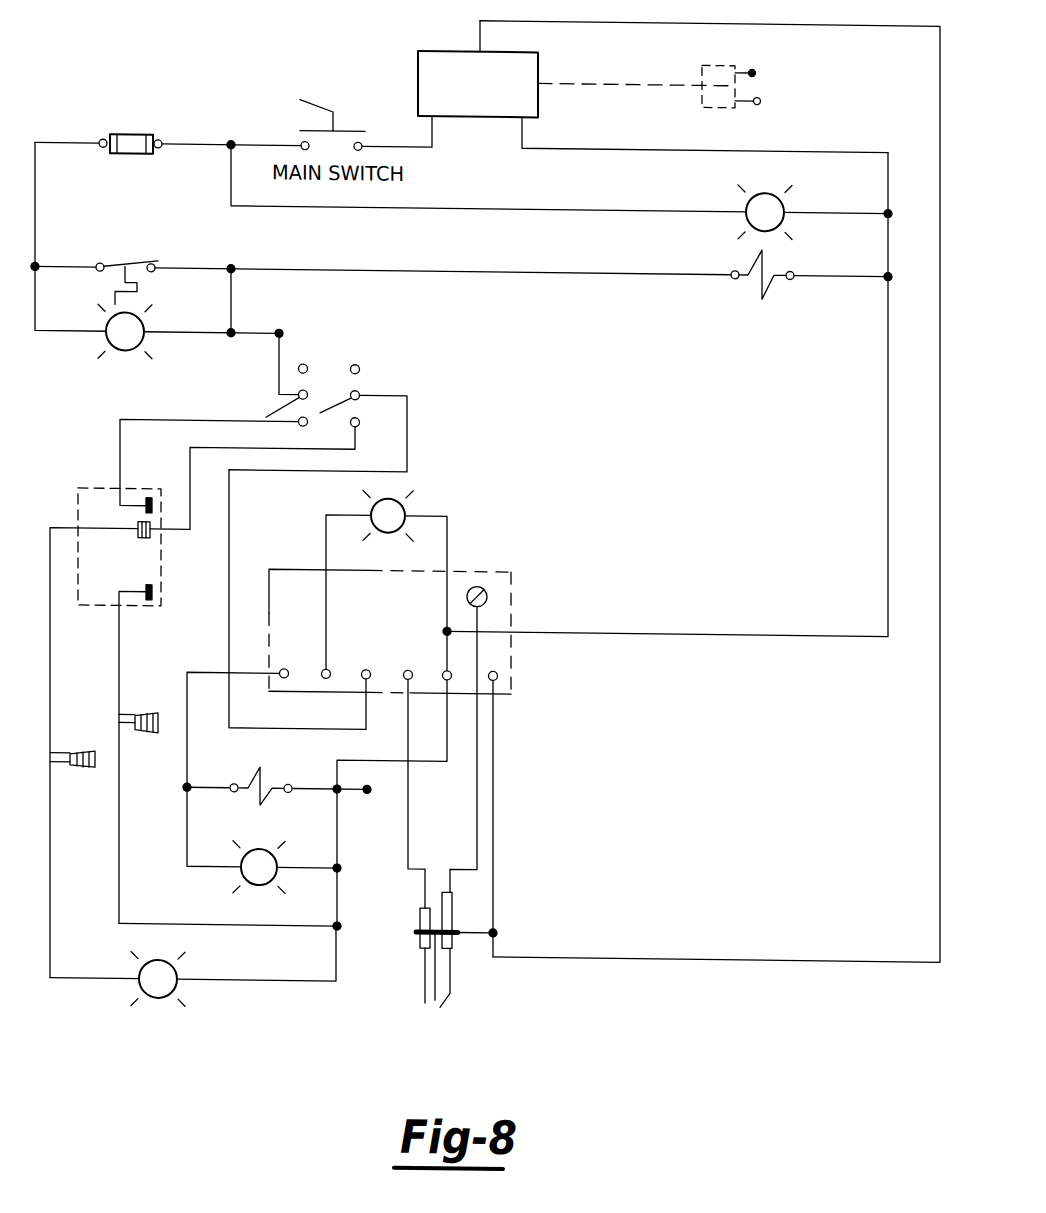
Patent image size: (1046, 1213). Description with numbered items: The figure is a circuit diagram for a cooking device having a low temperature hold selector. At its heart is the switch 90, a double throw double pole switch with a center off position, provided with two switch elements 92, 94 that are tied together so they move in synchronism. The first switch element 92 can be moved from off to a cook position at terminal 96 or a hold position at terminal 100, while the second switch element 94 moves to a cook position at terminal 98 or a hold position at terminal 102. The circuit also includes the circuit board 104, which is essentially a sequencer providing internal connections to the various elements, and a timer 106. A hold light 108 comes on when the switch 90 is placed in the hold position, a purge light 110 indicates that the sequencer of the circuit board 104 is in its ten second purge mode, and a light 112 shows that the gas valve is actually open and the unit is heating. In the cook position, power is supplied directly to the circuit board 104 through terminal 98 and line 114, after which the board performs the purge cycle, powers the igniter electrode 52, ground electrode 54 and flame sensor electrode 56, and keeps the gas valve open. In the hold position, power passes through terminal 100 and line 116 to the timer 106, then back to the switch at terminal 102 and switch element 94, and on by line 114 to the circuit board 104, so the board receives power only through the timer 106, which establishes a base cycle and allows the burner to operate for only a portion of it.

The igniter electrode 52 is at (453, 972).
The ground electrode 54 is at (433, 961).
The flame probe or sensor electrode 56 is at (421, 985).
The switch 90 is at (355, 375).
The switch element 92 is at (283, 407).
The switch element 94 is at (340, 404).
The terminal 96 is at (303, 360).
The terminal 98 is at (359, 362).
The terminal 100 is at (298, 422).
The terminal 102 is at (359, 421).
The circuit board 104 is at (298, 565).
The timer 106 is at (162, 588).
The hold light 108 is at (163, 997).
The purge light 110 is at (405, 507).
The light 112 is at (262, 845).
The line 114 is at (229, 615).
The line 116 is at (165, 416).